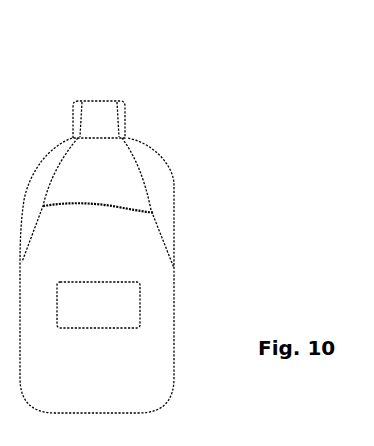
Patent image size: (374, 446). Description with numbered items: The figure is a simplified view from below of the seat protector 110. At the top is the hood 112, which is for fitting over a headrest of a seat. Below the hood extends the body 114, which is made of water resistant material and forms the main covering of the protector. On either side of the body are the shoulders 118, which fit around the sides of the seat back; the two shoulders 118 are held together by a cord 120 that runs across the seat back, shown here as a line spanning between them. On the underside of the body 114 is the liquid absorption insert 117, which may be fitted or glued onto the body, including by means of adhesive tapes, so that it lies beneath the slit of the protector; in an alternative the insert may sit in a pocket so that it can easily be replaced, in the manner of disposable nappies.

The seat protector 110 is at (184, 221).
The hood 112 is at (122, 113).
The body 114 is at (117, 252).
The liquid absorption insert 117 is at (122, 300).
The shoulders 118 is at (48, 159).
The cord 120 is at (93, 205).